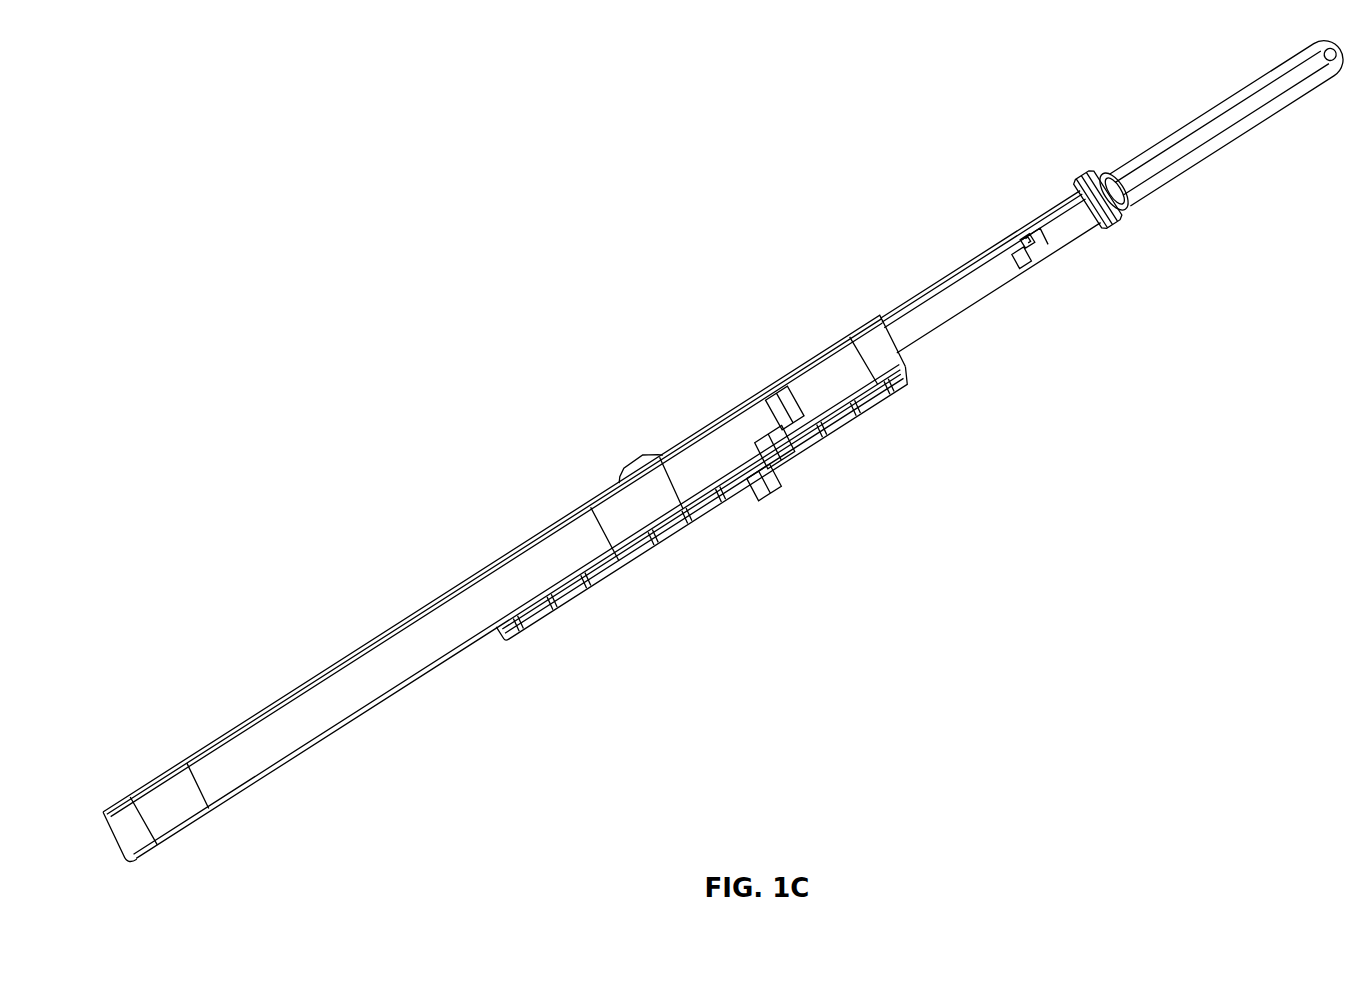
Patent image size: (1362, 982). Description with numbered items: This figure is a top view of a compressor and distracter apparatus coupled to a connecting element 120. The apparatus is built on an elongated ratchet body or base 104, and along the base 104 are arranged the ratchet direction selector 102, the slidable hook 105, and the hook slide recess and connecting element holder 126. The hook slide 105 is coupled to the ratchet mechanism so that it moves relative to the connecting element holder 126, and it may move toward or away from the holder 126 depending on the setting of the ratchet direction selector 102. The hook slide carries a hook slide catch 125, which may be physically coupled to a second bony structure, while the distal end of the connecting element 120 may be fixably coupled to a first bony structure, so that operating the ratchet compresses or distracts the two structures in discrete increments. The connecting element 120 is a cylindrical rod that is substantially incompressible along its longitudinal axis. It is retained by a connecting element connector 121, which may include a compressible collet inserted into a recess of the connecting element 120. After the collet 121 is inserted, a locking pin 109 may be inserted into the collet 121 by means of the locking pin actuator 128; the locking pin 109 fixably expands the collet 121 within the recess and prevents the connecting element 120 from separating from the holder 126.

The ratchet body or base 104 is at (303, 686).
The locking pin actuator 128 is at (772, 392).
The ratchet direction selector 102 is at (757, 436).
The locking pin 109 is at (764, 490).
The hook slide recess and connecting element holder 126 is at (947, 328).
The slidable hook 105 is at (1058, 234).
The hook slide catch 125 is at (1080, 195).
The connecting element connector 121 is at (1125, 212).
The connecting element 120 is at (1193, 120).